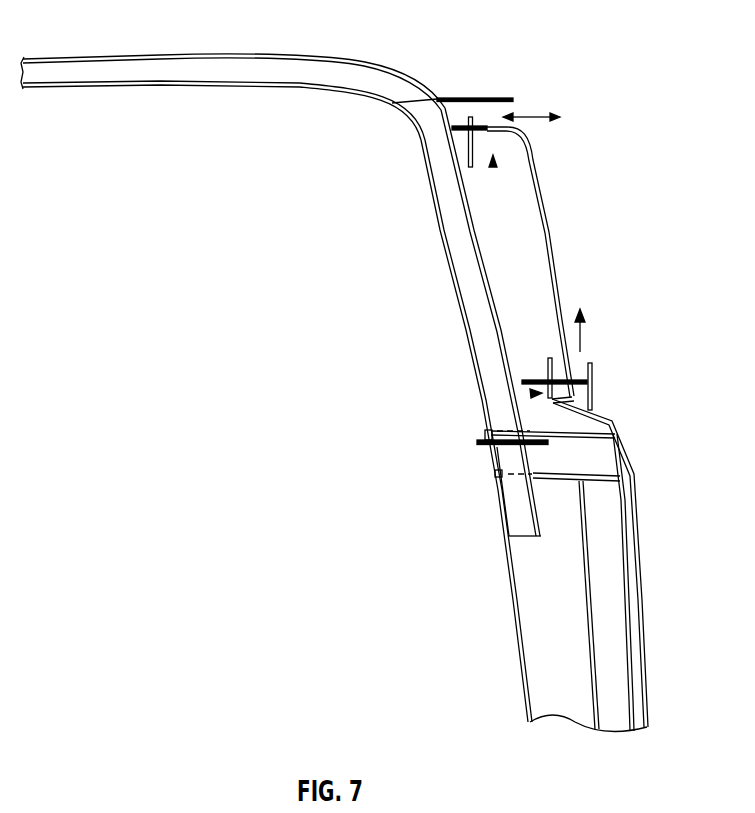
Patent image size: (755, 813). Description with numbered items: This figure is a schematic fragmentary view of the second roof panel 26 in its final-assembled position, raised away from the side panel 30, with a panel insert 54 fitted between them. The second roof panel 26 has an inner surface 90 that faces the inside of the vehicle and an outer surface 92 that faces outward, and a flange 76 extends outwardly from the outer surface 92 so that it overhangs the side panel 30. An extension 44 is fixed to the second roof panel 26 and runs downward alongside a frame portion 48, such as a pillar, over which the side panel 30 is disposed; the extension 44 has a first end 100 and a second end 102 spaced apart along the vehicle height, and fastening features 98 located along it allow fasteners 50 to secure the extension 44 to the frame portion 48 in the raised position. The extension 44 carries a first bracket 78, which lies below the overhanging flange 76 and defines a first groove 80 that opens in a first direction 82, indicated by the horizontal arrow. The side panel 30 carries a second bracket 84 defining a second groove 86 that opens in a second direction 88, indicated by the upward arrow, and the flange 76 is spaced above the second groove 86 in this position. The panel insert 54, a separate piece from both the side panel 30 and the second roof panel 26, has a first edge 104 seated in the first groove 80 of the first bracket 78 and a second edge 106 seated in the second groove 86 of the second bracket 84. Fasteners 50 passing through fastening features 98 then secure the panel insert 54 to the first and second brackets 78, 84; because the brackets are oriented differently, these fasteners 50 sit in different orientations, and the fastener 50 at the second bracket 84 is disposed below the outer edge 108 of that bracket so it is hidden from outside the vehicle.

The second roof panel 26 is at (233, 90).
The side panel 30 is at (645, 613).
The extension 44 is at (474, 353).
The frame portion 48 is at (525, 698).
The fastener 50 is at (467, 153).
The panel insert 54 is at (548, 232).
The flange 76 is at (503, 97).
The first bracket 78 is at (458, 98).
The first groove 80 is at (510, 113).
The first direction 82 is at (543, 123).
The second bracket 84 is at (595, 382).
The second groove 86 is at (592, 363).
The second direction 88 is at (584, 330).
The inner surface 90 is at (262, 86).
The outer surface 92 is at (263, 55).
The fastening feature 98 is at (494, 167).
The first end 100 is at (500, 490).
The second end 102 is at (418, 143).
The first edge 104 is at (466, 119).
The second edge 106 is at (610, 423).
The outer edge 108 is at (550, 357).